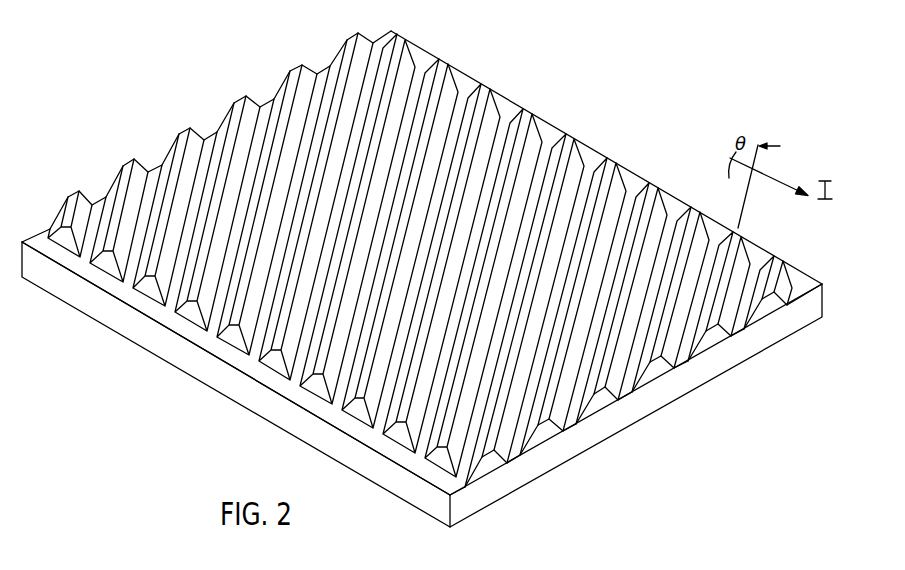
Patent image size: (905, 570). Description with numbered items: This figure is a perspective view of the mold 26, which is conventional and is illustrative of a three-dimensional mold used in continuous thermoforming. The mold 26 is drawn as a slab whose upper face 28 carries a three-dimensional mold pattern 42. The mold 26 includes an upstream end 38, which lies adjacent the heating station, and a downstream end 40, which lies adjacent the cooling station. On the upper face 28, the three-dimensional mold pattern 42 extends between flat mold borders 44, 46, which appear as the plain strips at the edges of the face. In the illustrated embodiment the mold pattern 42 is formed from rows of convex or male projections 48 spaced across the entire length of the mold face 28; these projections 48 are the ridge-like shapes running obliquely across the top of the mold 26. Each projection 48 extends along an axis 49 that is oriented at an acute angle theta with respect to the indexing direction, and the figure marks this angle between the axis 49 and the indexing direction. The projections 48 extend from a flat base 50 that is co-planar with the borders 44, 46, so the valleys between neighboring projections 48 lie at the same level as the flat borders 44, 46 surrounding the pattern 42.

The mold 26 is at (166, 356).
The upper face 28 is at (447, 98).
The upstream end 38 is at (155, 167).
The downstream end 40 is at (613, 412).
The three-dimensional mold pattern 42 is at (478, 122).
The flat mold border 44 is at (557, 128).
The flat mold border 46 is at (253, 373).
The projection 48 is at (693, 208).
The axis 49 is at (747, 206).
The flat base 50 is at (587, 175).